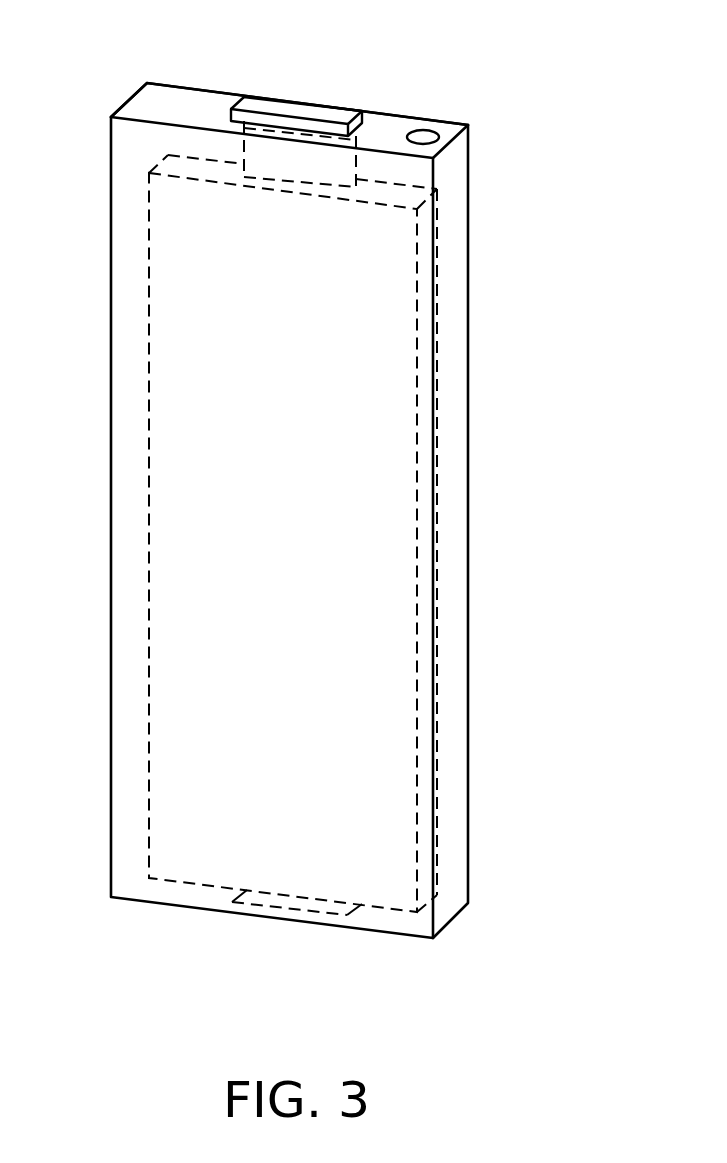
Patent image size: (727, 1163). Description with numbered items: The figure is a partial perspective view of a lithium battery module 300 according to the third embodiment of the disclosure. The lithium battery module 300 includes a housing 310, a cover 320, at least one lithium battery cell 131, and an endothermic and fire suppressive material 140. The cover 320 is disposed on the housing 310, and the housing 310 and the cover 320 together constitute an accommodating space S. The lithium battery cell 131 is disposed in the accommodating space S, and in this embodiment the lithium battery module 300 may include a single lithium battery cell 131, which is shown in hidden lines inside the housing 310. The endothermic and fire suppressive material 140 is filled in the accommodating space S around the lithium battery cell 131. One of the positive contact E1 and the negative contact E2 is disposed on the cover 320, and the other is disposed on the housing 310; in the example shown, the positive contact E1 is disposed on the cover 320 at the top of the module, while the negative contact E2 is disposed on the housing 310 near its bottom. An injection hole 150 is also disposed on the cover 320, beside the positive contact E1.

The lithium battery module 300 is at (631, 1004).
The housing 310 is at (460, 457).
The cover 320 is at (195, 103).
The injection hole 150 is at (424, 130).
The endothermic and fire suppressive material 140 is at (450, 315).
The lithium battery cell 131 is at (427, 507).
The positive contact E1 is at (300, 107).
The negative contact E2 is at (320, 913).
The accommodating space S is at (132, 330).